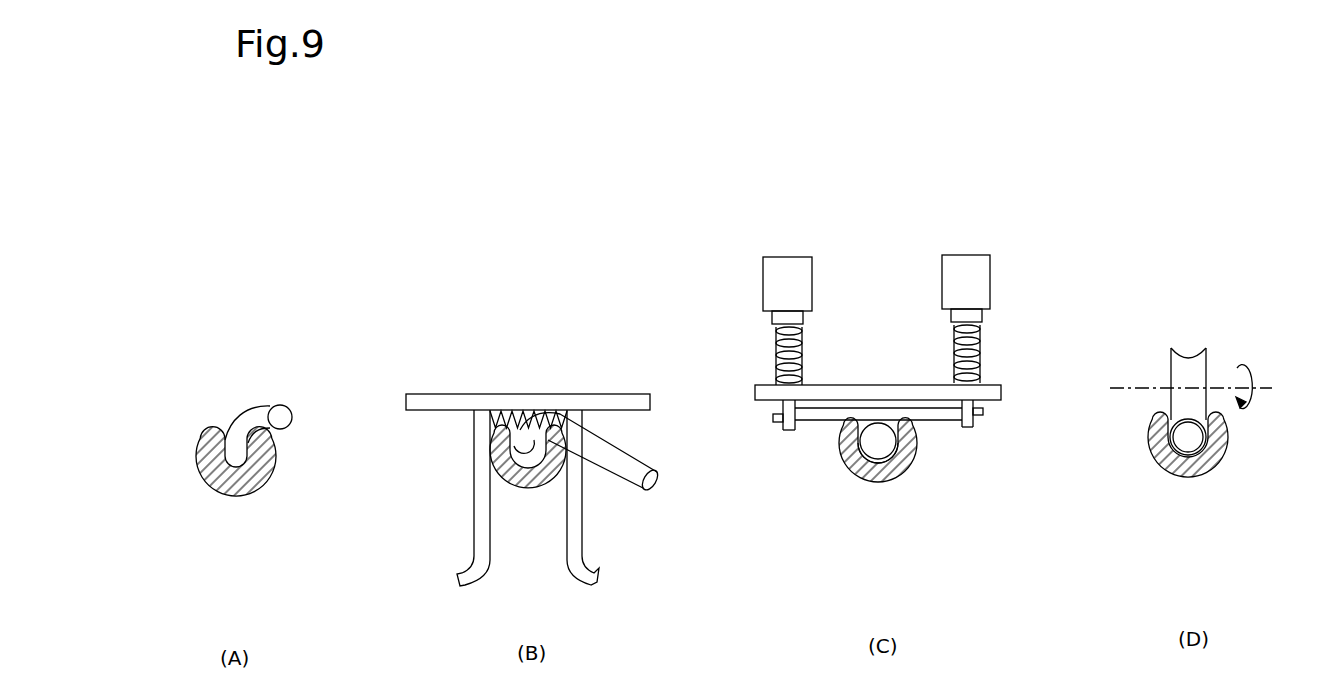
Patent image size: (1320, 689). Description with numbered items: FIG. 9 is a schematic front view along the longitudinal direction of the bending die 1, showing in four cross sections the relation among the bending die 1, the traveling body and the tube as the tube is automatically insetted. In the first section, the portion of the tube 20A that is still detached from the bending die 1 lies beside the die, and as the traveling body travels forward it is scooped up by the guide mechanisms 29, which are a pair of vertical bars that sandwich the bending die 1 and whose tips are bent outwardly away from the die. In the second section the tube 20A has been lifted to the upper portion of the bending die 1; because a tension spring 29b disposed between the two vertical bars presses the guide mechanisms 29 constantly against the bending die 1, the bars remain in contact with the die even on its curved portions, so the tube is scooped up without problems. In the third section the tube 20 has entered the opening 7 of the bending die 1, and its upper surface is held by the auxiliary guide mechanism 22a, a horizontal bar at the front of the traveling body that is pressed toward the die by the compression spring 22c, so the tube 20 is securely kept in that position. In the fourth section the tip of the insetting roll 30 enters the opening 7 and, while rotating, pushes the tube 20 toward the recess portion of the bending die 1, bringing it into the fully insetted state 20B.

The bending die 1 is at (203, 479).
The tube in the detached state 20A is at (282, 405).
The guide mechanisms 29 is at (480, 504).
The tension spring 29b is at (502, 410).
The compression spring 22c is at (775, 357).
The auxiliary guide mechanism 22a is at (822, 422).
The tube 20 is at (882, 442).
The opening 7 is at (900, 478).
The insetting roll 30 is at (1181, 370).
The tube in the insetted state 20B is at (1222, 453).